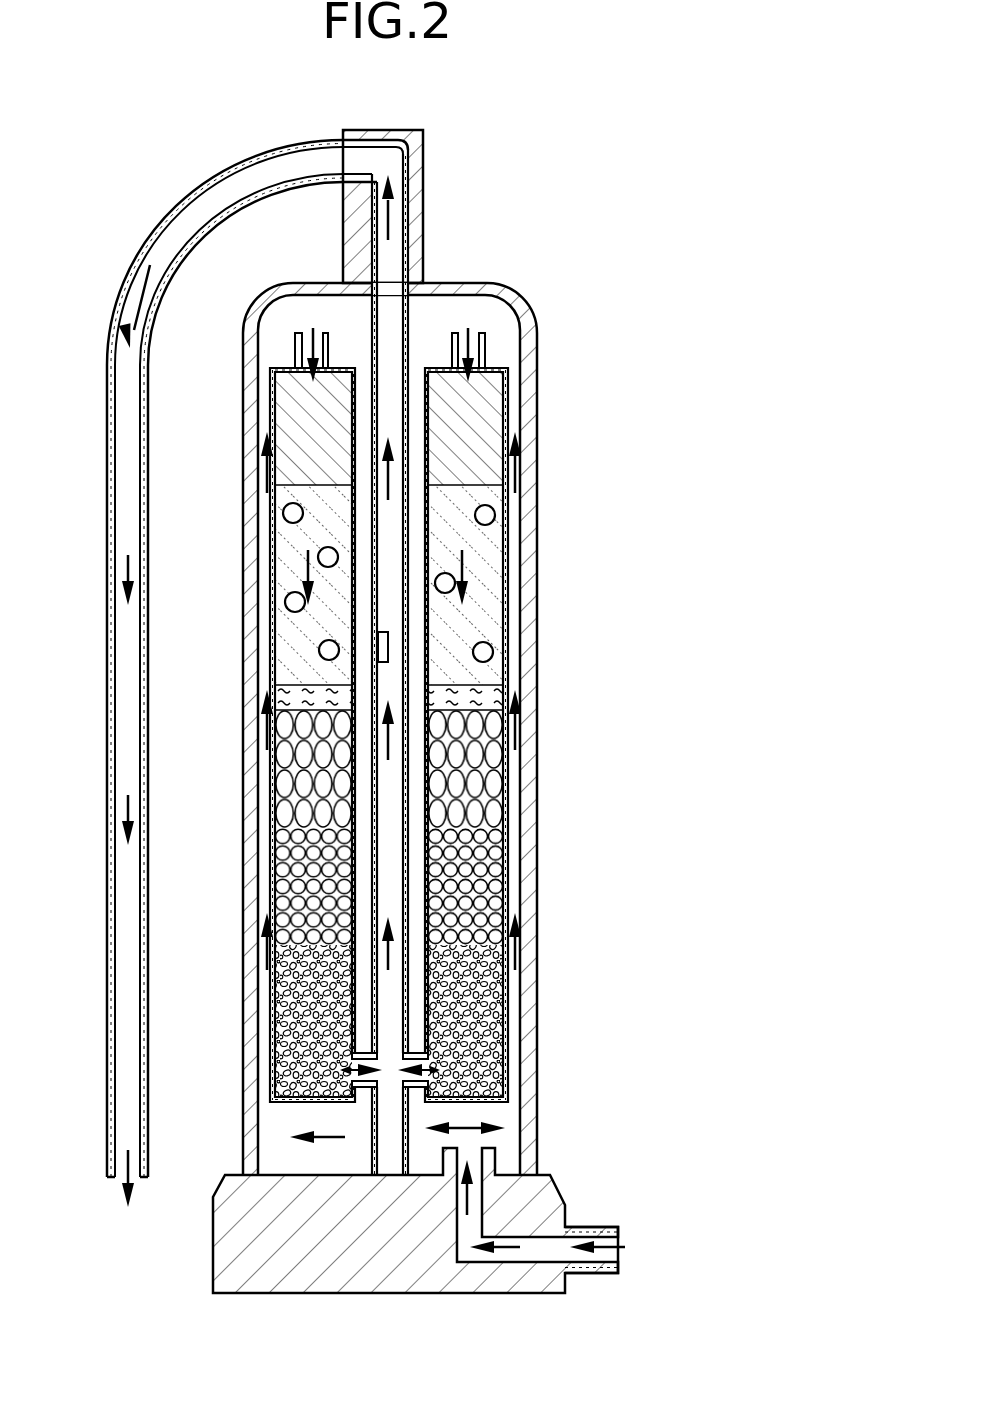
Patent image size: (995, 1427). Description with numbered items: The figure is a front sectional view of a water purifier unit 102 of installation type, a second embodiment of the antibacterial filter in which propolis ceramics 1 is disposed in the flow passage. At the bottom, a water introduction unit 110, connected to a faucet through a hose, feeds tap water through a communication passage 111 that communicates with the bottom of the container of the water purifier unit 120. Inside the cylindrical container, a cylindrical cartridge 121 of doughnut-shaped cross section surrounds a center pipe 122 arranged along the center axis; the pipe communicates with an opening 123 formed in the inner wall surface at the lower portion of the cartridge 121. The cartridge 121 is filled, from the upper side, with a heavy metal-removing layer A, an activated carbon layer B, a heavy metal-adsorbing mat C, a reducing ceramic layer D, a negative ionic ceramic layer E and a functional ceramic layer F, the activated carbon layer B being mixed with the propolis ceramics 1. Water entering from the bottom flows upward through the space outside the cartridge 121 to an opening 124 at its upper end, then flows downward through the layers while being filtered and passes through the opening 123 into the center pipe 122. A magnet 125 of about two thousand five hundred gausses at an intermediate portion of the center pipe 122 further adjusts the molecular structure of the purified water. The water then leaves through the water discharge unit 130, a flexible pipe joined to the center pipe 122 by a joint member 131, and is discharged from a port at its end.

The propolis ceramics 1 is at (497, 511).
The water purifier unit 102 is at (619, 909).
The water introduction unit 110 is at (587, 1227).
The communication passage 111 is at (535, 1245).
The water purifier unit 120 is at (512, 279).
The cylindrical cartridge 121 is at (493, 367).
The center pipe 122 is at (387, 257).
The opening 123 is at (420, 1083).
The opening 124 is at (473, 328).
The magnet 125 is at (383, 640).
The water discharge unit 130 is at (197, 973).
The joint member 131 is at (430, 150).
The heavy metal-removing layer A is at (472, 432).
The activated carbon layer B is at (488, 582).
The heavy metal-adsorbing mat C is at (486, 695).
The reducing ceramic layer D is at (480, 774).
The negative ionic ceramic layer E is at (467, 872).
The functional ceramic layer F is at (487, 983).